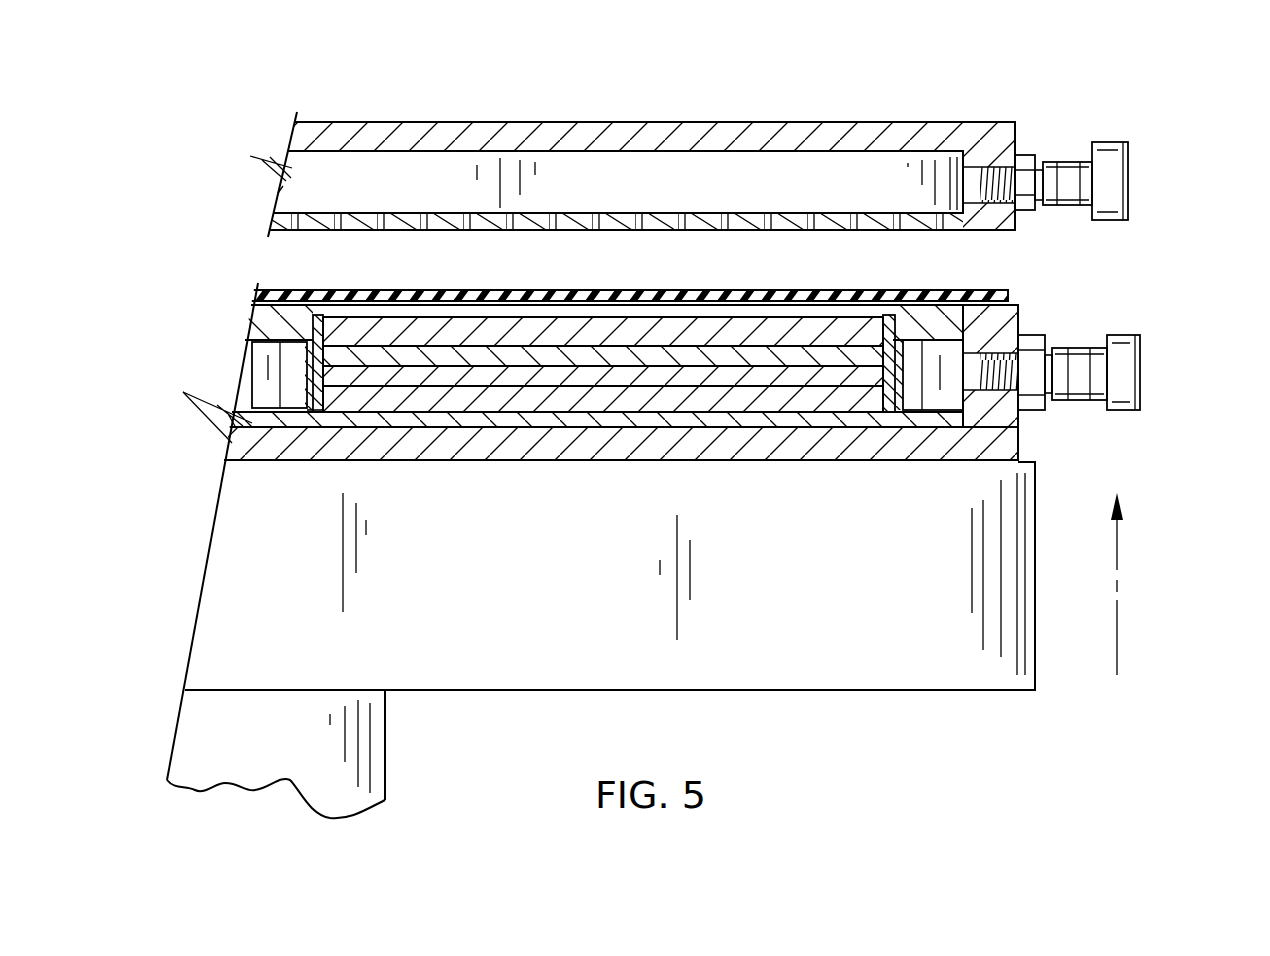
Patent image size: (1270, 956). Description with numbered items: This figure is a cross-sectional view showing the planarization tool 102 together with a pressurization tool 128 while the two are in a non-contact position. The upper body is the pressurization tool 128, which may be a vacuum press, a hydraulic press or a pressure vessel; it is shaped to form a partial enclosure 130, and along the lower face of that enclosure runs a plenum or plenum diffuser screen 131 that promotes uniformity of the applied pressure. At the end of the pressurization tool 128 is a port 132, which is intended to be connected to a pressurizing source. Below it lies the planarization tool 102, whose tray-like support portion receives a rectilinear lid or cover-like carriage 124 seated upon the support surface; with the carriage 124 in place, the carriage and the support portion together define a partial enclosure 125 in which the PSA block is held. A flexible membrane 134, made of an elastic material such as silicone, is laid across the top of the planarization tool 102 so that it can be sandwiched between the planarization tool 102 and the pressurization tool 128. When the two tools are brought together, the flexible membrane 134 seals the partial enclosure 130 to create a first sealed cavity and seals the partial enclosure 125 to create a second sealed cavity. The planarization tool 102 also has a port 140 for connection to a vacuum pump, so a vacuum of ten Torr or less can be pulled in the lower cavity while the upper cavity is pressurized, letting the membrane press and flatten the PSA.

The planarization tool 102 is at (704, 526).
The carriage 124 is at (268, 322).
The partial enclosure 125 is at (262, 331).
The pressurization tool 128 is at (758, 148).
The partial enclosure 130 is at (880, 180).
The plenum diffuser screen 131 is at (427, 213).
The port 132 is at (1110, 183).
The flexible membrane 134 is at (277, 292).
The port 140 is at (1128, 352).